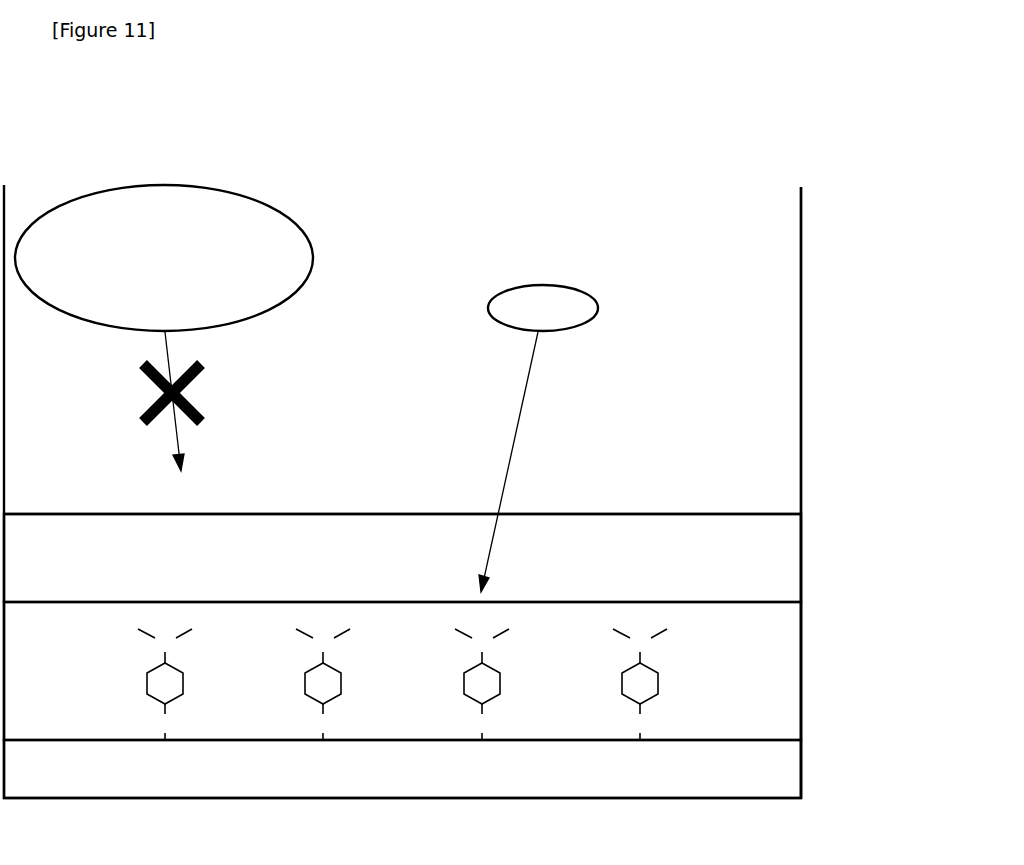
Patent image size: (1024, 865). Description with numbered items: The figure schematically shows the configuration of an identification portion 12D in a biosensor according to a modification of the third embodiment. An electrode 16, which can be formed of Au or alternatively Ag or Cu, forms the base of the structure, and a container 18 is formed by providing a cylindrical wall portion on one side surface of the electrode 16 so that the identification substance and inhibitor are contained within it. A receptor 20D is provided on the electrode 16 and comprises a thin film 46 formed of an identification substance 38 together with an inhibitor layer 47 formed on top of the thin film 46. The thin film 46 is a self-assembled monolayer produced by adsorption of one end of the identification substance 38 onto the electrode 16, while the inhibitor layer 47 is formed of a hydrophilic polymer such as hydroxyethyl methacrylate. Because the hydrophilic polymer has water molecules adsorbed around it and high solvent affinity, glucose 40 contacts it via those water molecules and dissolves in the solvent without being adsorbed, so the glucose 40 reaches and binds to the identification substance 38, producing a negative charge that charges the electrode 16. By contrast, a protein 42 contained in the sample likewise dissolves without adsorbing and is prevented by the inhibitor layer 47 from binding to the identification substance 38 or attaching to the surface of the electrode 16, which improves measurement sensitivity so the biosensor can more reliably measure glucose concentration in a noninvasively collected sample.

The identification portion 12D is at (741, 206).
The container 18 is at (802, 272).
The receptor 20D is at (770, 500).
The inhibitor layer 47 is at (746, 561).
The identification substance 38 is at (673, 677).
The thin film 46 is at (760, 678).
The electrode 16 is at (760, 742).
The protein 42 is at (283, 213).
The glucose 40 is at (578, 286).